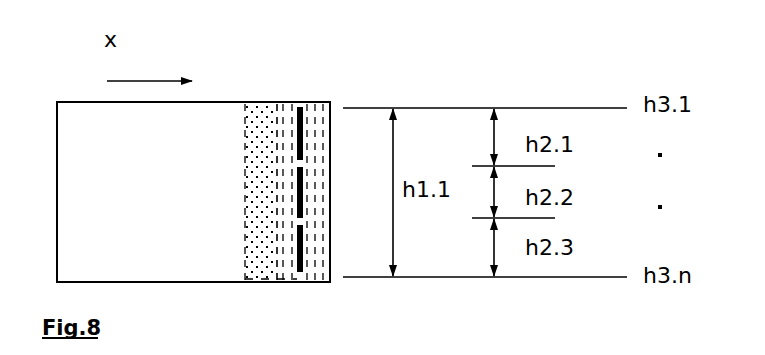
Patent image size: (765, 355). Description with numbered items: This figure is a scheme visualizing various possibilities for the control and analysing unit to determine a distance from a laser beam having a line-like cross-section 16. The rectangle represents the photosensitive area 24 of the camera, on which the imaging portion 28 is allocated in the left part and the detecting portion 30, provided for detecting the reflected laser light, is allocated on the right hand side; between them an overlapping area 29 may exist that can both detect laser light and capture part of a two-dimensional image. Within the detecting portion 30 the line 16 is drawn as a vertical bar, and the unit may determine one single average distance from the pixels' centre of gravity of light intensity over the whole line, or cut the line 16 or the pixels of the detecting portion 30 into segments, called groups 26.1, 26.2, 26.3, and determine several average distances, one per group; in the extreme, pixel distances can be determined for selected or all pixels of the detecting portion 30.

The photosensitive area 24 is at (95, 98).
The imaging portion 28 is at (127, 160).
The overlapping area 29 is at (258, 113).
The detecting portion 30 is at (292, 113).
The line-like cross-section 16 is at (293, 258).
The first group 26.1 is at (303, 118).
The second group 26.2 is at (363, 125).
The third group 26.3 is at (345, 277).